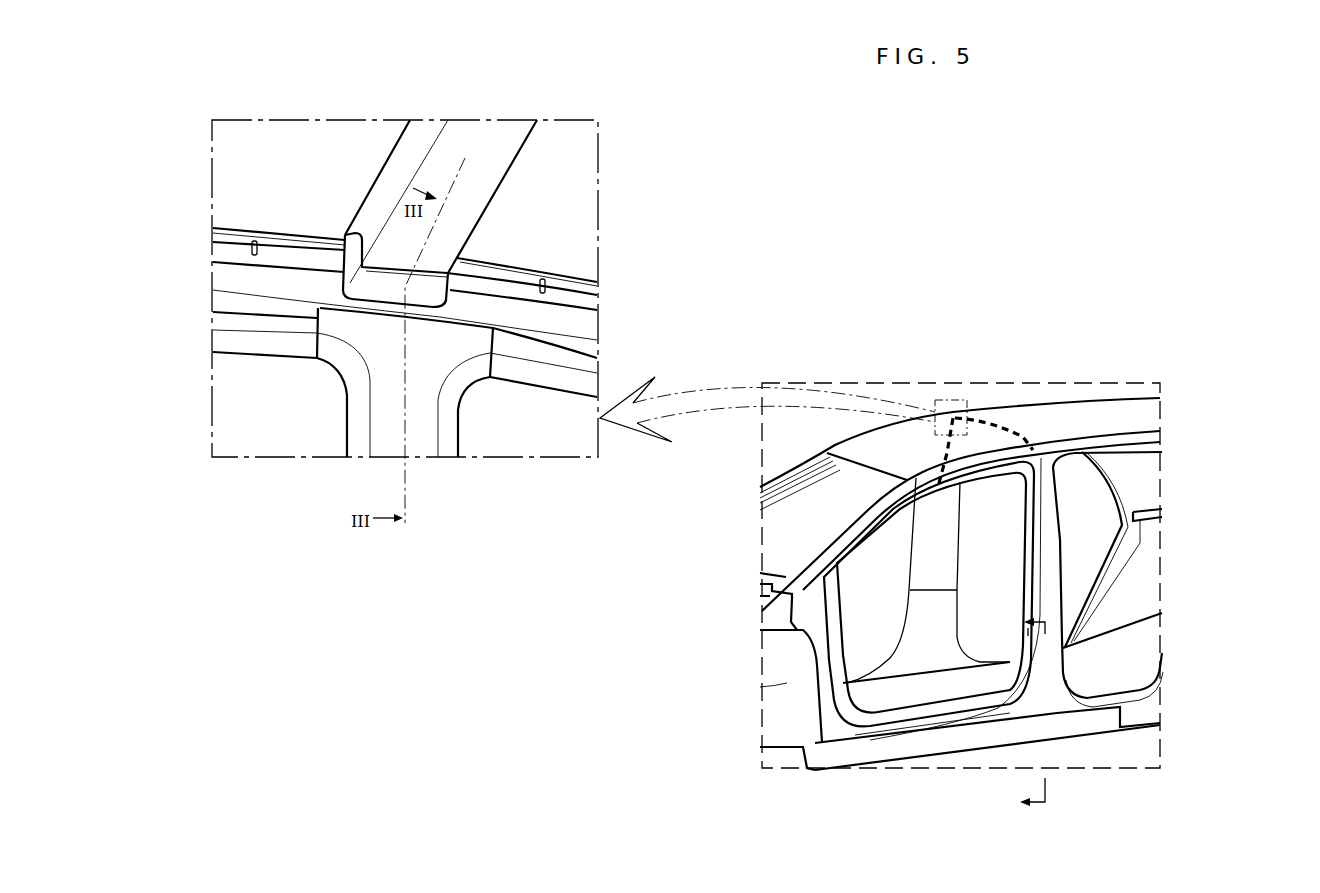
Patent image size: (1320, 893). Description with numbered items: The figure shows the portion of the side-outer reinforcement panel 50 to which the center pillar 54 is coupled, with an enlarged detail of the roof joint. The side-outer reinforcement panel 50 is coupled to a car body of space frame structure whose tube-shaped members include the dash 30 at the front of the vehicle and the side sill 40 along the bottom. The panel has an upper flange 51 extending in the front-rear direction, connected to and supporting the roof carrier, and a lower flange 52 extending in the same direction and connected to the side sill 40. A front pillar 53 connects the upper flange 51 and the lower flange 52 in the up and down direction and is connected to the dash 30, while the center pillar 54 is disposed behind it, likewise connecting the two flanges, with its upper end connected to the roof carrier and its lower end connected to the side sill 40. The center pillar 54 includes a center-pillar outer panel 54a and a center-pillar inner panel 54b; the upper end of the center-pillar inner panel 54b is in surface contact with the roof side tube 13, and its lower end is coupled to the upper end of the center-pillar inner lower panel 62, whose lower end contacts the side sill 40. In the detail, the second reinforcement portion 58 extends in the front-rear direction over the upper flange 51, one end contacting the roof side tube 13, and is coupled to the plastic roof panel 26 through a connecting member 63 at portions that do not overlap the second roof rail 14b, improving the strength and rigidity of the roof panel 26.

The second roof rail 14b is at (418, 148).
The roof panel 26 is at (230, 172).
The connecting member 63 is at (250, 250).
The second reinforcement portion 58 is at (547, 270).
The roof side tube 13 is at (587, 328).
The upper flange 51 is at (247, 338).
The center pillar 54 is at (1260, 530).
The center-pillar outer panel 54a is at (1052, 596).
The center-pillar inner panel 54b is at (423, 440).
The center-pillar inner lower panel 62 is at (937, 615).
The dash 30 is at (777, 664).
The front pillar 53 is at (823, 705).
The lower flange 52 is at (903, 724).
The side sill 40 is at (952, 740).
The side-outer reinforcement panel 50 is at (1060, 714).